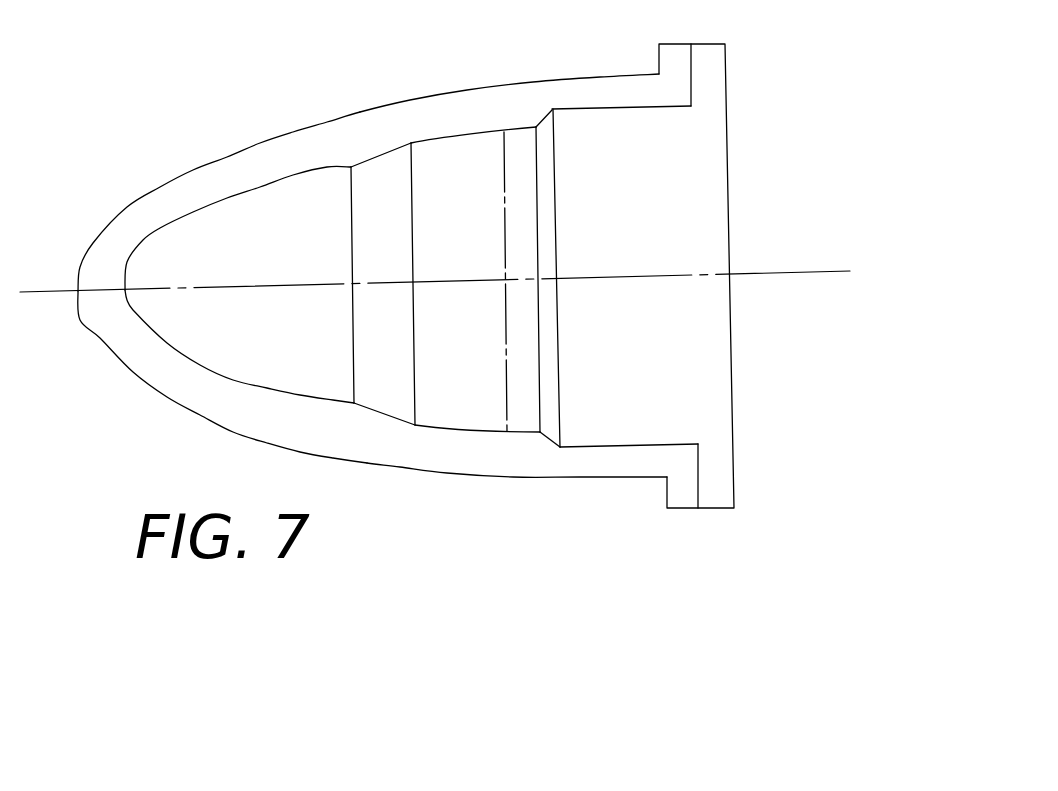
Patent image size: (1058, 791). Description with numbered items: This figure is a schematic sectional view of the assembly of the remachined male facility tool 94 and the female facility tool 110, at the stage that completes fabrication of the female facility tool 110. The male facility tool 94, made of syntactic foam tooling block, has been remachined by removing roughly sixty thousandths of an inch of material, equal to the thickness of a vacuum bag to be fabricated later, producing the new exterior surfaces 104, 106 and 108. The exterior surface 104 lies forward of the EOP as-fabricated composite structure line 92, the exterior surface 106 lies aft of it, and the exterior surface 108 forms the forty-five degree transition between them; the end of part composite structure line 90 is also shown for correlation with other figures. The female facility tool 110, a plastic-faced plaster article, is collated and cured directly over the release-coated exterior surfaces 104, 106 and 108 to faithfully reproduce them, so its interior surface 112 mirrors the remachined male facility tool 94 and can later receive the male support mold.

The end of part composite structure line 90 is at (507, 320).
The EOP of the as-fabricated composite structure line 92 is at (537, 230).
The male facility tool 94 is at (725, 101).
The exterior surface 104 is at (377, 152).
The exterior surface 106 is at (607, 107).
The exterior surface 108 is at (543, 122).
The female facility tool 110 is at (408, 98).
The interior surface 112 is at (228, 198).